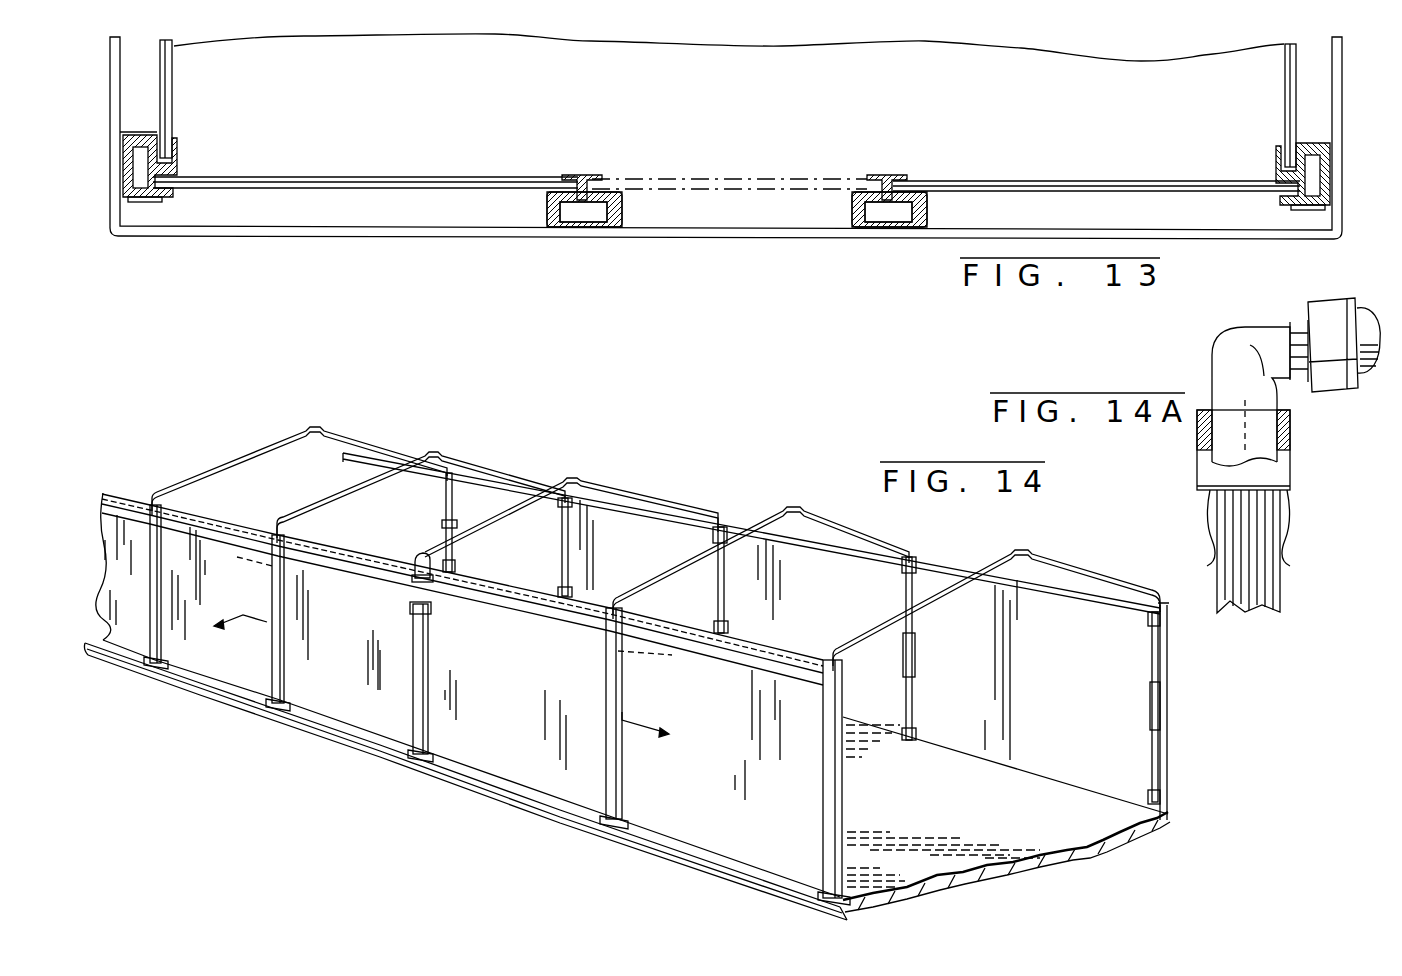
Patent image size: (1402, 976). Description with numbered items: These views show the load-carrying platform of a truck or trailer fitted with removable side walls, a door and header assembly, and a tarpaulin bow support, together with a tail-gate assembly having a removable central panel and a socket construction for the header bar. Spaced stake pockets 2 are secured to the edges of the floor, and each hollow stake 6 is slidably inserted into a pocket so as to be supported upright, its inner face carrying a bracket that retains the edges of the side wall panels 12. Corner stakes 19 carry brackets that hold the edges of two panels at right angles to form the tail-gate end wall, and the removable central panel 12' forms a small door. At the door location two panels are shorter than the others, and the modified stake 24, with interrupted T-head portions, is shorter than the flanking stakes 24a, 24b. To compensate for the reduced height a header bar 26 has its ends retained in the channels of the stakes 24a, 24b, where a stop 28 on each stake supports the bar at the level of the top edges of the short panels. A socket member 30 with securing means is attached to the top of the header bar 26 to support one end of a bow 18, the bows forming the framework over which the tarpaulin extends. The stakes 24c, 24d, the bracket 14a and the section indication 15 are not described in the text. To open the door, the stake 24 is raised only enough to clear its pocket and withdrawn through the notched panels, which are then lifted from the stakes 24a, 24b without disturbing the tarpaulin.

In FIG. 13, the stake pocket 2 is at (111, 67).
In FIG. 14, the stake pocket 2 is at (709, 877).
In FIG. 13, the stake 6 is at (566, 226).
In FIG. 13, the panel 12 is at (726, 115).
In FIG. 14A, the panel 12 is at (1275, 551).
In FIG. 14, the panel 12 is at (632, 656).
In FIG. 13, the removable panel 12' is at (729, 135).
In FIG. 14, the bracket clip 14a is at (442, 524).
In FIG. 14, the section line 15 is at (428, 694).
In FIG. 14A, the bow 18 is at (1350, 312).
In FIG. 14, the bow 18 is at (318, 430).
In FIG. 13, the corner stake 19 is at (140, 198).
In FIG. 14, the modified stake 24 is at (560, 553).
In FIG. 14, the stake 24a is at (268, 712).
In FIG. 14, the stake 24b is at (607, 818).
In FIG. 14, the rail 24c is at (447, 470).
In FIG. 14, the post 24d is at (737, 520).
In FIG. 14, the header bar 26 is at (520, 603).
In FIG. 14, the stop 28 is at (453, 604).
In FIG. 14A, the socket member 30 is at (1275, 472).
In FIG. 14, the socket member 30 is at (418, 574).